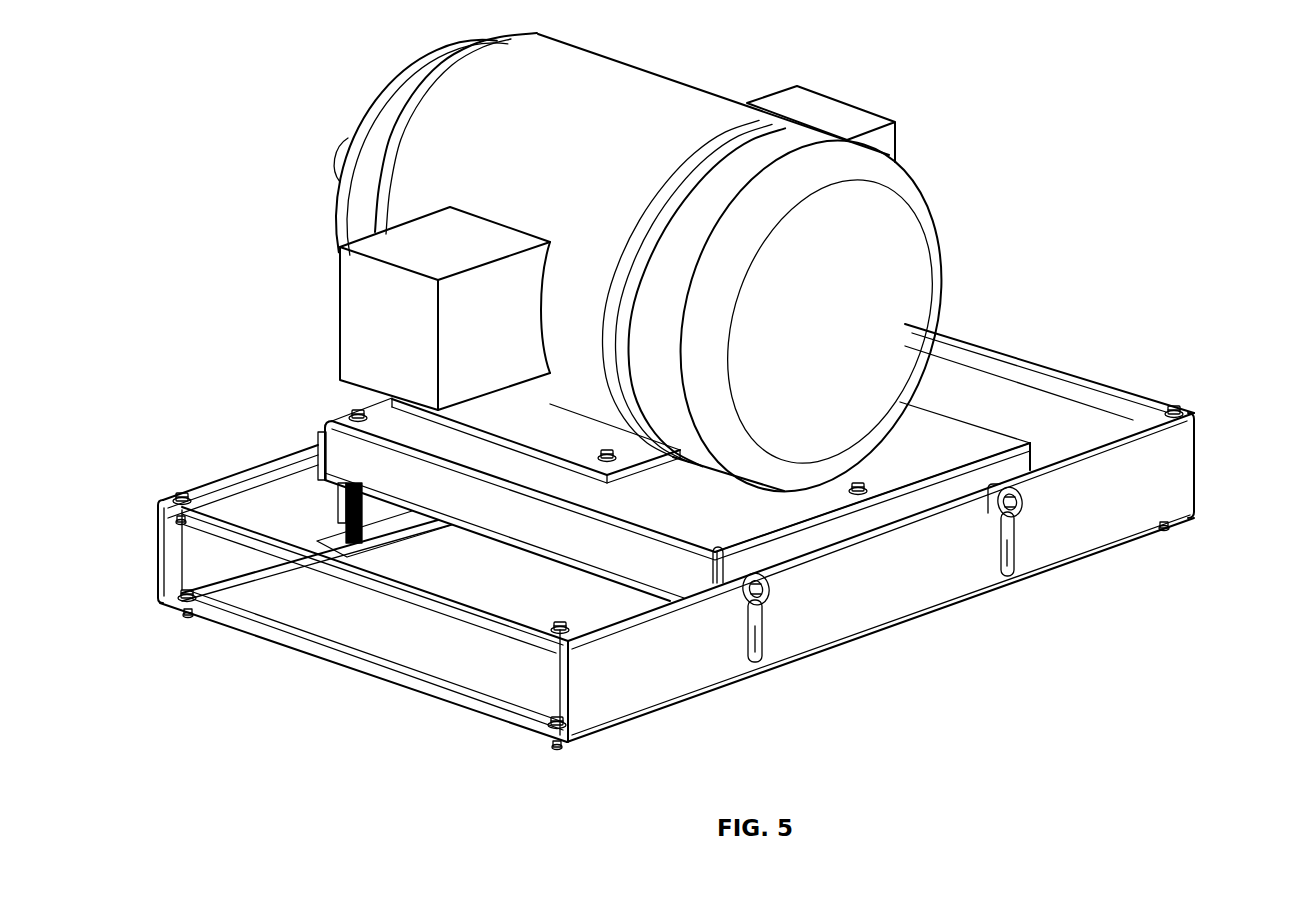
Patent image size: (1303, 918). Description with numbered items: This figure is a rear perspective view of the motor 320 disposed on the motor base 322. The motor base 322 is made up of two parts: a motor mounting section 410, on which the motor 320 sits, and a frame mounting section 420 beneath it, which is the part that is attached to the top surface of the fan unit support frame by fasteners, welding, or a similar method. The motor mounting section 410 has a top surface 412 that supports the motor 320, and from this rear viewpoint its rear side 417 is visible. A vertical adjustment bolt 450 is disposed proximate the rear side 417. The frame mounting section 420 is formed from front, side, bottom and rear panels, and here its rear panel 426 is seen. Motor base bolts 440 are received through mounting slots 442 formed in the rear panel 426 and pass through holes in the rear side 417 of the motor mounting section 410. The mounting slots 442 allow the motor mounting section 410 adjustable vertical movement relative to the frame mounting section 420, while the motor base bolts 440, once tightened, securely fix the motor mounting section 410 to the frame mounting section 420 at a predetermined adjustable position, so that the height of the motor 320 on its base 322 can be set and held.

The motor 320 is at (648, 67).
The motor base 322 is at (1035, 363).
The motor mounting section 410 is at (988, 427).
The top surface 412 is at (935, 432).
The rear side 417 is at (848, 546).
The frame mounting section 420 is at (1199, 469).
The rear panel 426 is at (650, 690).
The motor base bolts 440 is at (1026, 502).
The mounting slots 442 is at (1016, 548).
The vertical adjustment bolt 450 is at (873, 490).